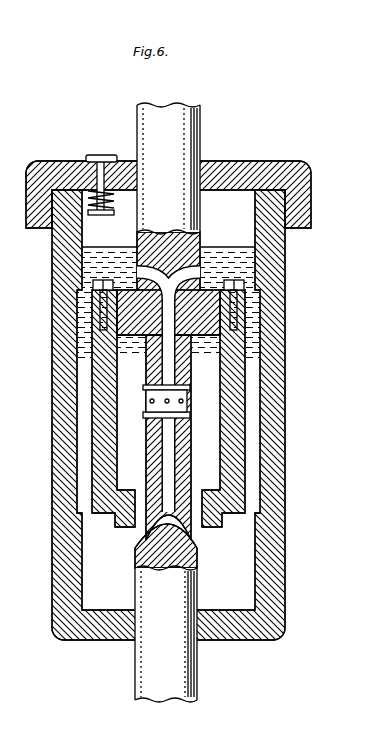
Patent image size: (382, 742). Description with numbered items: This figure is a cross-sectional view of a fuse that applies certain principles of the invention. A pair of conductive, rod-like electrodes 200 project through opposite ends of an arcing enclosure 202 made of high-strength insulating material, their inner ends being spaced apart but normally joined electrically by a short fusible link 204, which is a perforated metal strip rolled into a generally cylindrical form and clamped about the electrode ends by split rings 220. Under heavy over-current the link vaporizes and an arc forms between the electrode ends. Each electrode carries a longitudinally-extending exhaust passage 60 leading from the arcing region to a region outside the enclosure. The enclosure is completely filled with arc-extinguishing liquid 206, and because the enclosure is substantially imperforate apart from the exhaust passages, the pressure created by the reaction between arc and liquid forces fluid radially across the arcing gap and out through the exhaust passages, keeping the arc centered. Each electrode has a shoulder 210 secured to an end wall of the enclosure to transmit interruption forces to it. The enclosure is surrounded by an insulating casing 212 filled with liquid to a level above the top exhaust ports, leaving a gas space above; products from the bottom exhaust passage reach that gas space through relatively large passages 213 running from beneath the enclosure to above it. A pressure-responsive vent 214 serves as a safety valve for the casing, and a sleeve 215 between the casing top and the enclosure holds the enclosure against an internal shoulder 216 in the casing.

The exhaust passage 60 is at (145, 276).
The electrode 200 is at (203, 142).
The arcing enclosure 202 is at (235, 387).
The fusible link 204 is at (190, 405).
The arc-extinguishing liquid 206 is at (107, 250).
The shoulder 210 is at (212, 340).
The insulating casing 212 is at (287, 325).
The passages 213 is at (253, 443).
The pressure-responsive vent 214 is at (99, 156).
The sleeve 215 is at (252, 222).
The internal shoulder 216 is at (237, 516).
The split rings 220 is at (148, 388).